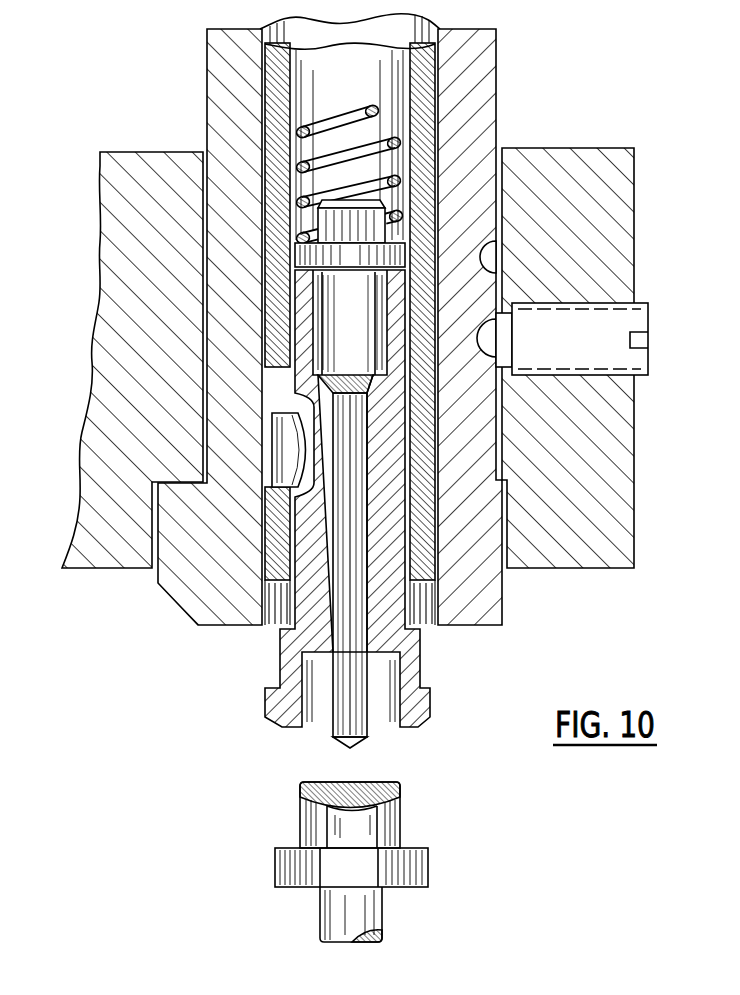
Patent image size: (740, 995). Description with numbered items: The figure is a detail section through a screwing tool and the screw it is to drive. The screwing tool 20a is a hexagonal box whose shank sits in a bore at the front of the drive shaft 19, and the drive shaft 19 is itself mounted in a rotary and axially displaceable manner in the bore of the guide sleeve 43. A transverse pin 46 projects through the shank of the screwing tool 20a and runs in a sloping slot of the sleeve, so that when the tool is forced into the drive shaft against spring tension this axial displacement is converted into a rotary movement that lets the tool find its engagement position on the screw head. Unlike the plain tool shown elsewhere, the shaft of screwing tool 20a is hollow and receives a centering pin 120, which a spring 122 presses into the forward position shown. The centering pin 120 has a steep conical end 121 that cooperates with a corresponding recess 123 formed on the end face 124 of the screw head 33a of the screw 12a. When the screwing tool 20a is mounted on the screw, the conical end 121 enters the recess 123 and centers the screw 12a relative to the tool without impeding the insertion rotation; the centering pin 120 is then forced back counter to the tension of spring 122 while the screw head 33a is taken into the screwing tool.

The spring 122 is at (392, 141).
The transverse pin 46 is at (293, 455).
The drive shaft 19 is at (425, 553).
The guide sleeve 43 is at (490, 605).
The centering pin 120 is at (353, 638).
The steep conical end 121 is at (360, 744).
The screwing tool 20a is at (288, 648).
The recess 123 is at (339, 783).
The end face 124 is at (388, 771).
The screw head 33a is at (317, 820).
The screw 12a is at (372, 841).